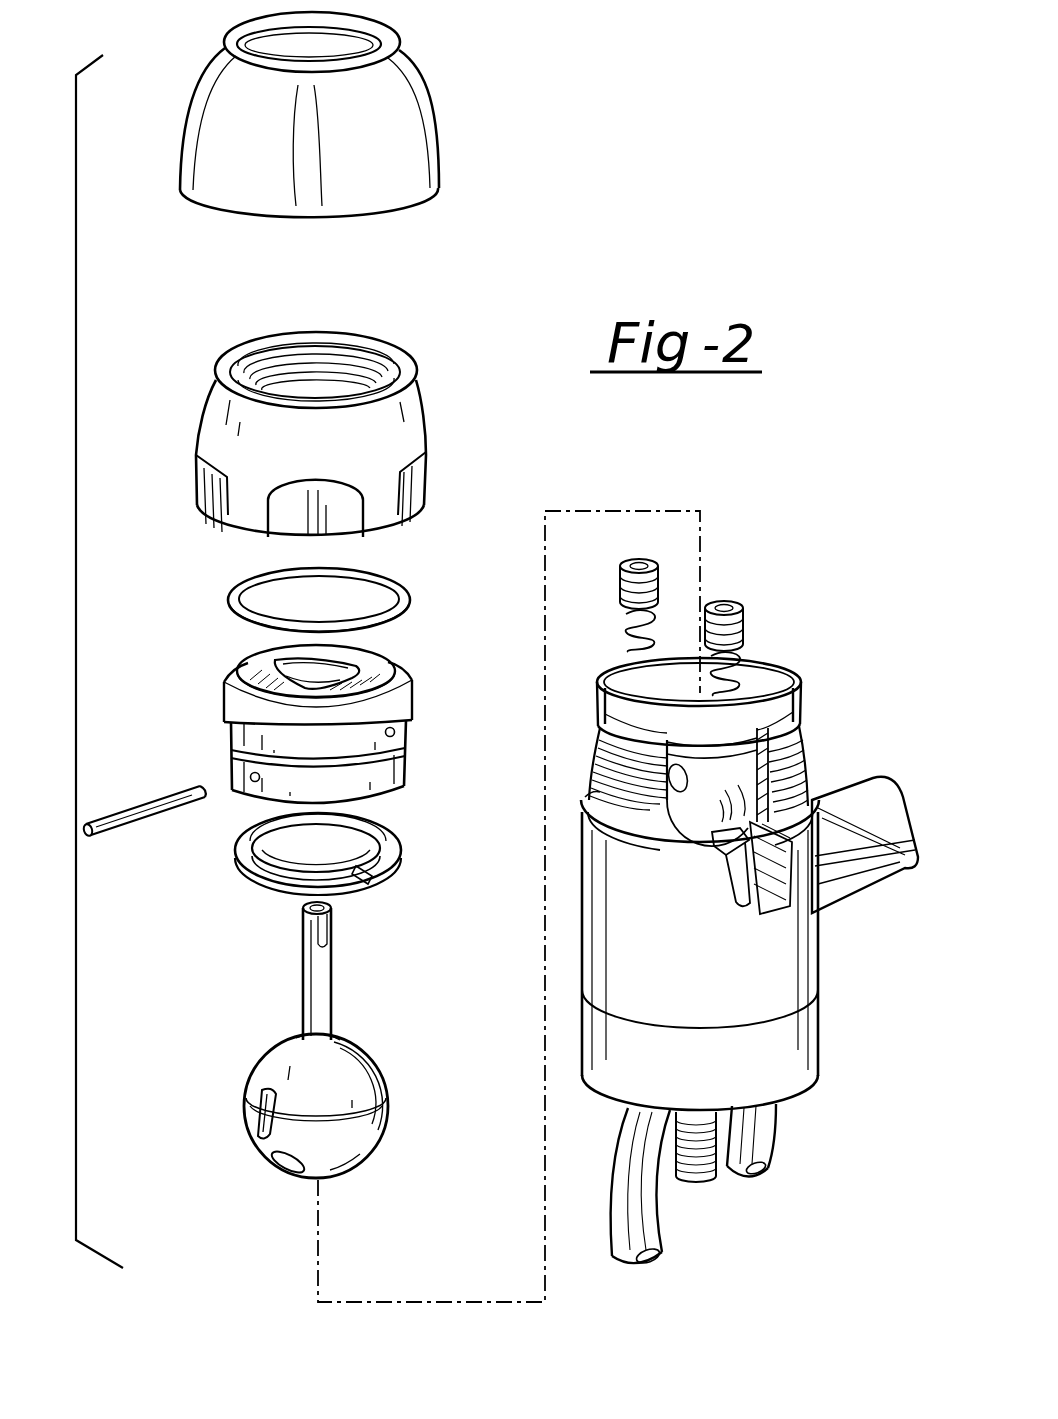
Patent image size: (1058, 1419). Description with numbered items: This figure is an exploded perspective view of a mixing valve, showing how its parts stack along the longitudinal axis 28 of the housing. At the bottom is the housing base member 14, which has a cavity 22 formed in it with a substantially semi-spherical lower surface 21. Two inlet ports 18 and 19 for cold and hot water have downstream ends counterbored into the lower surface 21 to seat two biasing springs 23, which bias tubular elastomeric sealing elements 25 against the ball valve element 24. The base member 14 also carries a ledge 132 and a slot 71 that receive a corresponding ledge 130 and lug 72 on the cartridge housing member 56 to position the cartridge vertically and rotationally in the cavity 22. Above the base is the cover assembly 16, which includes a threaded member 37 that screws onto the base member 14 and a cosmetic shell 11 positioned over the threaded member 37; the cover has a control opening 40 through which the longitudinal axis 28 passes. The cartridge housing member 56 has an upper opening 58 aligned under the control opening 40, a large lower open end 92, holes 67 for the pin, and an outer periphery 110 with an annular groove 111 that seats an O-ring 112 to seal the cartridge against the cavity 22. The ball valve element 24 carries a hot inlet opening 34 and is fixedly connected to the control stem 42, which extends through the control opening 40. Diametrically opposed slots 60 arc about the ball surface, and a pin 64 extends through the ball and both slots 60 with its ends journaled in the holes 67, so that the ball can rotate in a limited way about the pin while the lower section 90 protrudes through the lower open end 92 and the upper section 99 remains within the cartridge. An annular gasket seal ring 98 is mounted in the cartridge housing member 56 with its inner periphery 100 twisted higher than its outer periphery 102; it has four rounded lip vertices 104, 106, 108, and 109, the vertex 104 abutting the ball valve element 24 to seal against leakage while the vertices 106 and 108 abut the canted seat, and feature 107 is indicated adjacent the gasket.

The cosmetic shell 11 is at (418, 115).
The control opening 40 is at (370, 316).
The cover assembly 16 is at (182, 334).
The threaded member 37 is at (397, 435).
The O-ring 112 is at (250, 582).
The ledge 130 is at (225, 690).
The upper opening 58 is at (330, 666).
The lug 72 is at (400, 740).
The outer periphery 110 is at (400, 731).
The annular groove 111 is at (400, 745).
The housing member 56 is at (320, 717).
The holes 67 is at (250, 777).
The pin 64 is at (165, 795).
The lower open end 92 is at (375, 800).
The gasket seal ring 98 is at (359, 894).
The inner periphery 100 is at (360, 872).
The vertex 106 is at (383, 846).
The vertex 108 is at (368, 880).
The outer periphery 102 is at (365, 886).
The notch edge 107 is at (360, 882).
The vertex 109 is at (364, 880).
The vertex 104 is at (355, 886).
The control stem 42 is at (303, 993).
The ball valve element 24 is at (332, 1065).
The slots 60 is at (250, 1097).
The upper section 99 is at (375, 1090).
The lower section 90 is at (355, 1142).
The hot inlet opening 34 is at (285, 1172).
The longitudinal axis 28 is at (650, 511).
The sealing elements 25 is at (727, 600).
The ledge 132 is at (620, 690).
The biasing springs 23 is at (710, 690).
The slot 71 is at (790, 690).
The cavity 22 is at (780, 738).
The lower surface 21 is at (790, 770).
The inlet port 19 is at (710, 763).
The housing base member 14 is at (740, 957).
The inlet port 18 is at (735, 845).